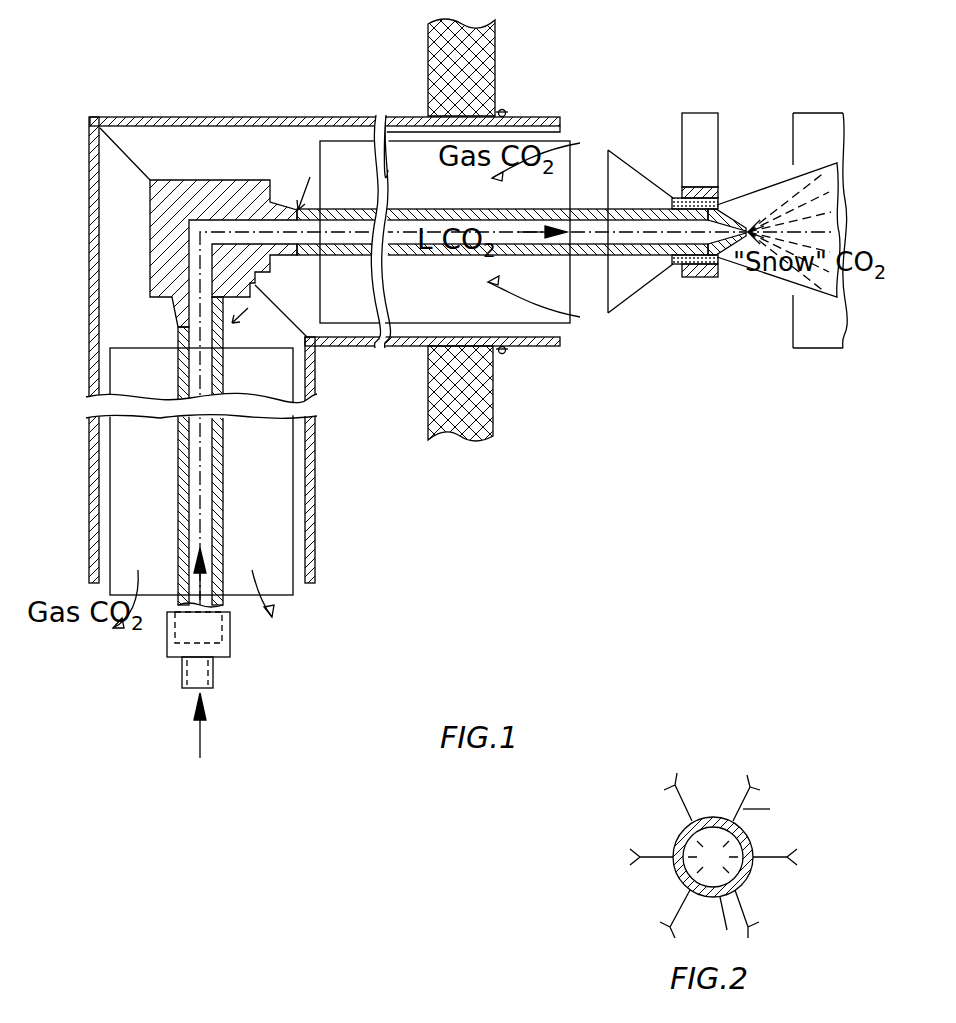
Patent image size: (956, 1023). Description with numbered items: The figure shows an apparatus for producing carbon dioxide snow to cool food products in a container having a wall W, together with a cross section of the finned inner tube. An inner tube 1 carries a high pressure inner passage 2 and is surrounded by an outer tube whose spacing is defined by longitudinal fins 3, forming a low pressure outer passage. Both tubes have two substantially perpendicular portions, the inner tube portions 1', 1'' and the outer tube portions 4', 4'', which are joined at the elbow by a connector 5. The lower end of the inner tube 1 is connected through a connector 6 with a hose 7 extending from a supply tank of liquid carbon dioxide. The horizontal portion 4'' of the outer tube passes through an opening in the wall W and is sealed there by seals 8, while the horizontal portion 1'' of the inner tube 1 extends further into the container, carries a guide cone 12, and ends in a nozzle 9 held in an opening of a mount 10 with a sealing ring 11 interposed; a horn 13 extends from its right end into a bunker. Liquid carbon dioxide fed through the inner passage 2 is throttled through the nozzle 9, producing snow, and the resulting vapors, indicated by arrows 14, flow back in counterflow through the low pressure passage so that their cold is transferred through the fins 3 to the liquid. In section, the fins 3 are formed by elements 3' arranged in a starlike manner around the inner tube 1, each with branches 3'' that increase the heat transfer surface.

In FIG. 1, the inner tube 1 is at (283, 451).
In FIG. 1, the vertical portion of inner tube 1' is at (133, 467).
In FIG. 1, the horizontal portion of inner tube 1'' is at (521, 152).
In FIG. 1, the inner passage 2 is at (202, 512).
In FIG. 1, the longitudinal fins 3 is at (235, 488).
In FIG. 2, the longitudinal fins 3 is at (713, 828).
In FIG. 2, the fin elements 3' is at (713, 833).
In FIG. 2, the branches 3'' is at (781, 789).
In FIG. 1, the vertical portion of outer tube 4' is at (333, 460).
In FIG. 1, the horizontal portion of outer tube 4'' is at (324, 350).
In FIG. 1, the connector 5 is at (205, 200).
In FIG. 1, the connector 6 is at (178, 648).
In FIG. 1, the hose 7 is at (193, 672).
In FIG. 1, the seals 8 is at (497, 355).
In FIG. 1, the nozzle 9 is at (747, 222).
In FIG. 1, the mount 10 is at (692, 132).
In FIG. 1, the sealing ring 11 is at (725, 270).
In FIG. 1, the guide cone 12 is at (618, 290).
In FIG. 1, the horn 13 is at (777, 277).
In FIG. 1, the arrows 14 is at (562, 156).
In FIG. 1, the wall W is at (427, 402).